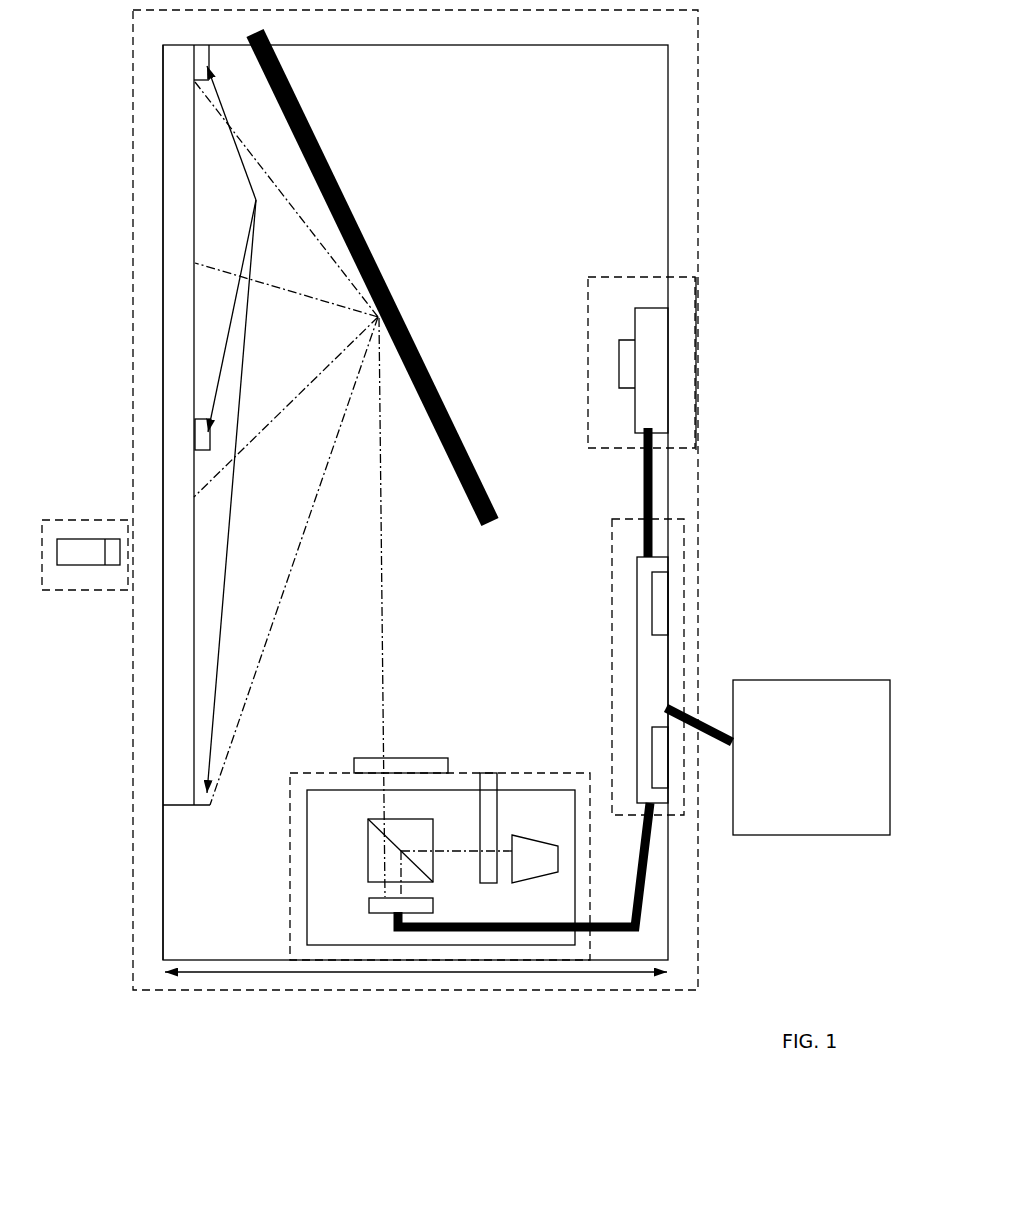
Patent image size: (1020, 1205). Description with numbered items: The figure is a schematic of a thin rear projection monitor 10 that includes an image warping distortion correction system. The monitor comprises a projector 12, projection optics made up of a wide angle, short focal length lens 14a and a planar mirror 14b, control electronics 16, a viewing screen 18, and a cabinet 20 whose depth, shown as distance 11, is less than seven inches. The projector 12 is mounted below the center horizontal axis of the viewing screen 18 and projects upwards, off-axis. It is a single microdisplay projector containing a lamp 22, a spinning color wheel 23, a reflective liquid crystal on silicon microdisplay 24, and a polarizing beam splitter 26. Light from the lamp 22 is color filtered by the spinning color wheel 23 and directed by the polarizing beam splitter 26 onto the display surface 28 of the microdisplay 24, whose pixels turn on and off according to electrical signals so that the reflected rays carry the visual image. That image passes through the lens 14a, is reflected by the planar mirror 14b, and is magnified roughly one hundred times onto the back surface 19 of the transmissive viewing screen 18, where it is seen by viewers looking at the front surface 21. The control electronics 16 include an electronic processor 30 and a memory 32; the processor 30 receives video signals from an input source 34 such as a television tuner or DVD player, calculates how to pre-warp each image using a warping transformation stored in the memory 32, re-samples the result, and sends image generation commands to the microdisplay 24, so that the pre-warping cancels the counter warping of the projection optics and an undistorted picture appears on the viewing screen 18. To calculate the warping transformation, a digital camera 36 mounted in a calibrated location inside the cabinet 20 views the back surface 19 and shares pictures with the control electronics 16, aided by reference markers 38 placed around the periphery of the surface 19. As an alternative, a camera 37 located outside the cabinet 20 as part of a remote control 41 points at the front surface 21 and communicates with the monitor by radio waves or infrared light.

The rear projection monitor 10 is at (715, 74).
The distance 11 is at (380, 975).
The projector 12 is at (464, 757).
The wide angle, short focal length lens 14a is at (357, 764).
The planar mirror 14b is at (438, 378).
The control electronics 16 is at (605, 612).
The viewing screen 18 is at (175, 740).
The surface 19 is at (205, 527).
The cabinet 20 is at (668, 137).
The front surface 21 is at (162, 413).
The lamp 22 is at (528, 857).
The spinning color wheel 23 is at (492, 803).
The liquid crystal on silicon microdisplay 24 is at (366, 907).
The polarizing beam splitter 26 is at (378, 843).
The display surface 28 is at (395, 897).
The electronic processor 30 is at (662, 750).
The memory 32 is at (663, 598).
The input source 34 is at (825, 692).
The camera 36 is at (656, 352).
The camera 37 is at (111, 566).
The reference markers 38 is at (244, 419).
The remote control 41 is at (61, 603).